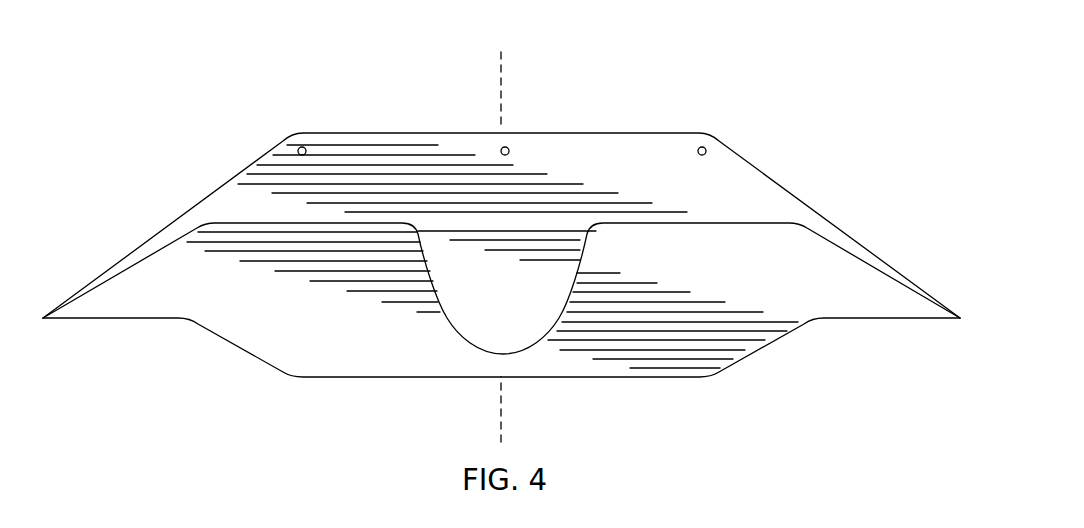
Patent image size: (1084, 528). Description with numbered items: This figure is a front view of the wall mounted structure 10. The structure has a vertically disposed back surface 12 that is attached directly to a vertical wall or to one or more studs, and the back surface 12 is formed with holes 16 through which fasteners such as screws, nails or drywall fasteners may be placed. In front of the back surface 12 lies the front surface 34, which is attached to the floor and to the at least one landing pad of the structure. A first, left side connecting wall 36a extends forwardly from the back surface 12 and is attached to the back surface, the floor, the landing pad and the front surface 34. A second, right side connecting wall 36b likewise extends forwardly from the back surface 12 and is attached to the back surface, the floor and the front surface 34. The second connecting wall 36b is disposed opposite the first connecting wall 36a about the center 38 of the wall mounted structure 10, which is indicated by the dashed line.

The wall mounted structure 10 is at (800, 69).
The back surface 12 is at (612, 153).
The holes 16 is at (305, 147).
The front surface 34 is at (778, 272).
The first connecting wall 36a is at (247, 343).
The second connecting wall 36b is at (758, 343).
The center 38 is at (501, 67).